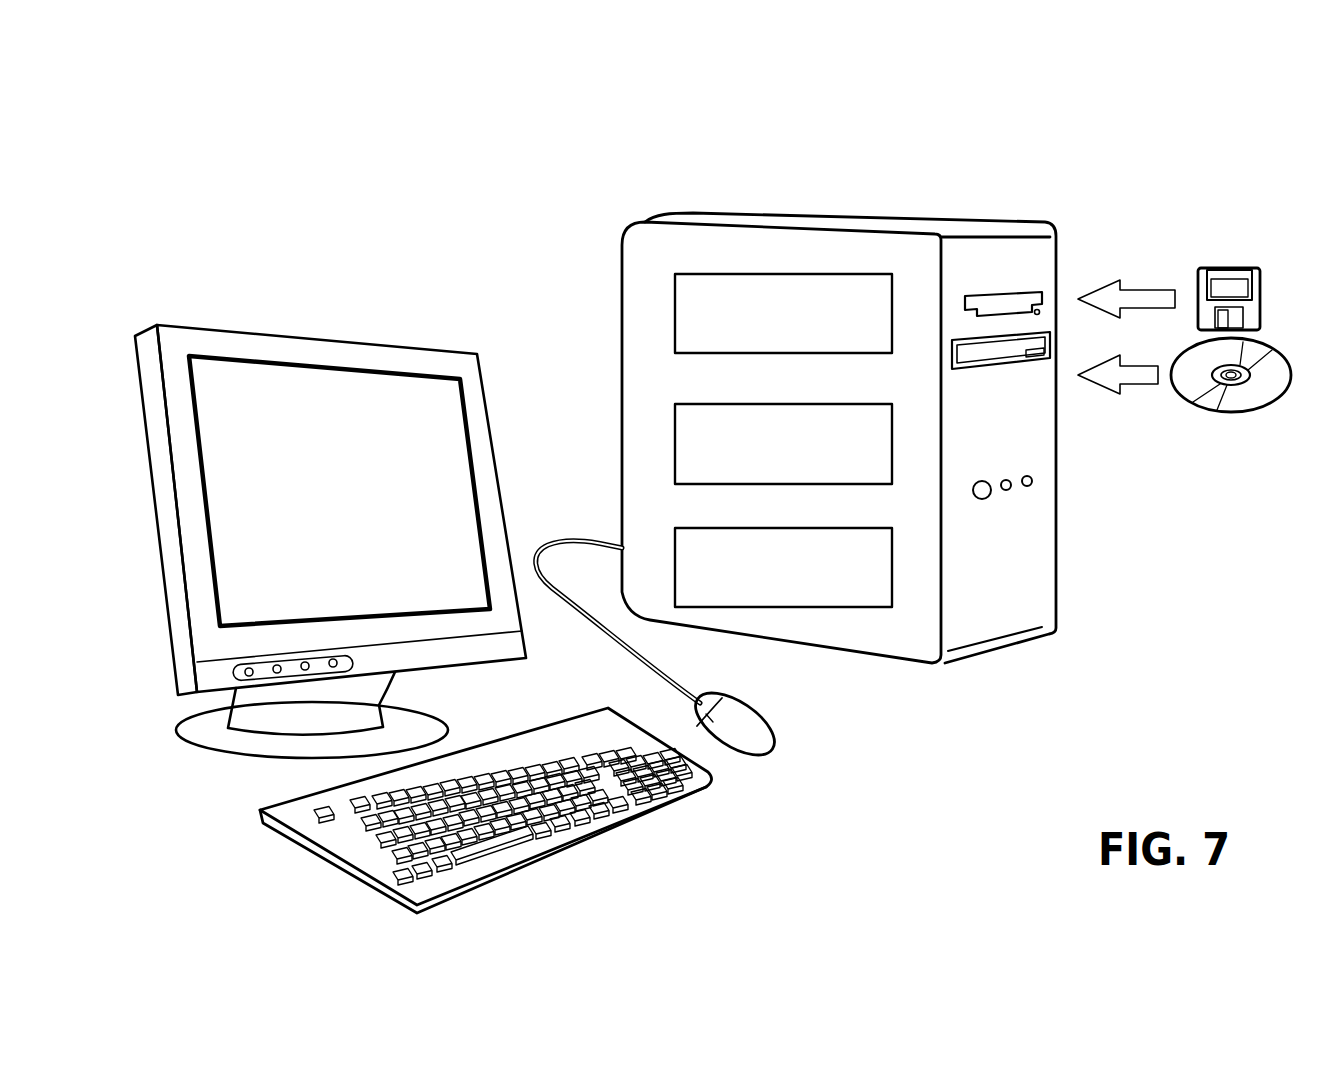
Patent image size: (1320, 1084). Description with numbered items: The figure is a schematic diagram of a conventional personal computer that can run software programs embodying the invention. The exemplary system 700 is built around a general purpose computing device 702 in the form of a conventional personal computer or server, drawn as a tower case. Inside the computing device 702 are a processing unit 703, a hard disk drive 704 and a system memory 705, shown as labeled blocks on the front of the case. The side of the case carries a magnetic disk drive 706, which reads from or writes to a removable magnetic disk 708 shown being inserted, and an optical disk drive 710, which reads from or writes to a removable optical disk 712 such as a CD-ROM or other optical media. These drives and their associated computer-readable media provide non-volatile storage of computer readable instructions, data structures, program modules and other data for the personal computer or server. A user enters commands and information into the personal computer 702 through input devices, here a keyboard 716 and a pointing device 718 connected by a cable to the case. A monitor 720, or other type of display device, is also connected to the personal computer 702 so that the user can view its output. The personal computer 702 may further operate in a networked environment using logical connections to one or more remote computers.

The system 700 is at (390, 132).
The general purpose computing device 702 is at (915, 228).
The processing unit 703 is at (805, 344).
The hard disk drive 704 is at (805, 475).
The system memory 705 is at (805, 600).
The magnetic disk drive 706 is at (1025, 298).
The removable magnetic disk 708 is at (1230, 268).
The optical disk drive 710 is at (1013, 357).
The removable optical disk 712 is at (1233, 405).
The keyboard 716 is at (557, 838).
The pointing device 718 is at (765, 743).
The monitor 720 is at (284, 354).